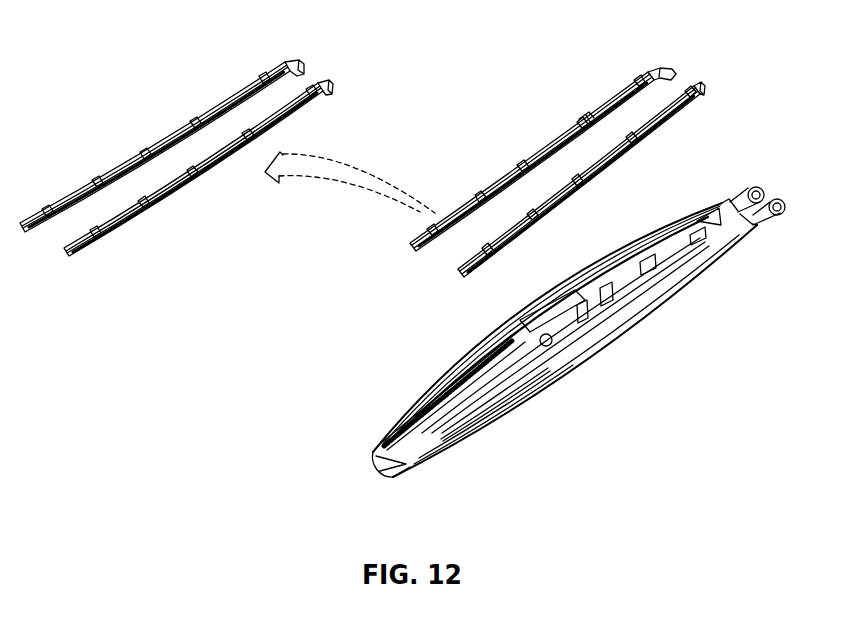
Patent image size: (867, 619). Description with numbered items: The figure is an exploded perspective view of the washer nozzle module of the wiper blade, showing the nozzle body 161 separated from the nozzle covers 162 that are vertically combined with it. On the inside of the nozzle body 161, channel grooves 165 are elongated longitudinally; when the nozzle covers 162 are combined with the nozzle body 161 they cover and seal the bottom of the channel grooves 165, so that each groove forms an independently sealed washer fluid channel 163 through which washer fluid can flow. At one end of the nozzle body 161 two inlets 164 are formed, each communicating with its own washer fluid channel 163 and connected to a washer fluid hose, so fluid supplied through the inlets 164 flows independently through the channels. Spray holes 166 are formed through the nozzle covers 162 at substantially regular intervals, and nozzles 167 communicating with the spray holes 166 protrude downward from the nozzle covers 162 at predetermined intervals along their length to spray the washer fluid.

The nozzle body 161 is at (565, 332).
The nozzle covers 162 is at (665, 63).
The washer fluid channel 163 is at (426, 369).
The inlets 164 is at (765, 218).
The channel grooves 165 is at (448, 372).
The spray holes 166 is at (145, 153).
The nozzles 167 is at (581, 111).